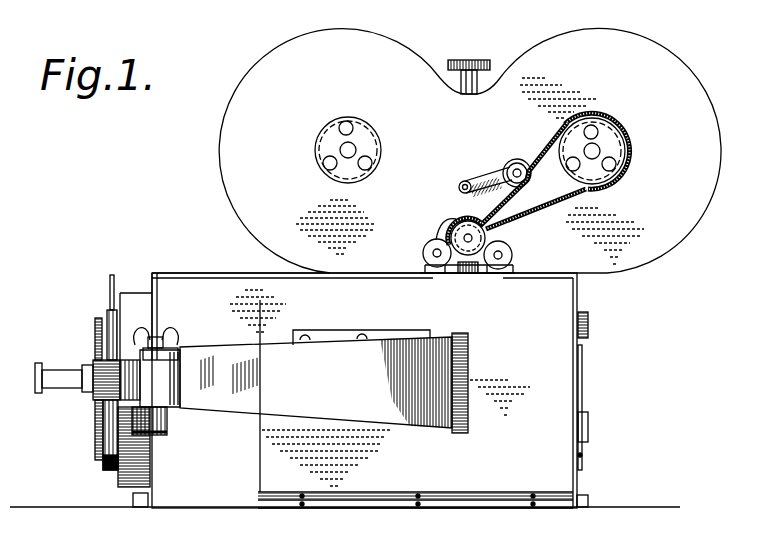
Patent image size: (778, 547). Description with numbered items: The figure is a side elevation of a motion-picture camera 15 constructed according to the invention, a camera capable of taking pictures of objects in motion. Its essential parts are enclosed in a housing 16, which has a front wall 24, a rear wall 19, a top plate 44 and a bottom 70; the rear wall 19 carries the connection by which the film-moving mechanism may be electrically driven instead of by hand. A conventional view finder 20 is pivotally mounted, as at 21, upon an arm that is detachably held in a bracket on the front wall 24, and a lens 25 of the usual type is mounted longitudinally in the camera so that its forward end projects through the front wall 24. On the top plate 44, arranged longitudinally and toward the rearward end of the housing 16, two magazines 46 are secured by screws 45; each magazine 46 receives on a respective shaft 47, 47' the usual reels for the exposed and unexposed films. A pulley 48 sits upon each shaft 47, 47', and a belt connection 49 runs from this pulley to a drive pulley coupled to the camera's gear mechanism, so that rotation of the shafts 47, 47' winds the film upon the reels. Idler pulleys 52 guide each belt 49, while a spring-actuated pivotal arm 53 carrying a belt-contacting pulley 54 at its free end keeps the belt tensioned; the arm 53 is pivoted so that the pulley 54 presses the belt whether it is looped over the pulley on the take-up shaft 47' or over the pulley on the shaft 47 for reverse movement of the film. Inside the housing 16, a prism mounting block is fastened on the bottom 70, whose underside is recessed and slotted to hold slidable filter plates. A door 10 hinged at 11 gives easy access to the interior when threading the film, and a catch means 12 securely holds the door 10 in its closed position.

The camera 15 is at (212, 179).
The magazine 46 is at (470, 161).
The screw 45 is at (478, 47).
The shaft 47 is at (377, 133).
The pulley 48 is at (331, 149).
The shaft 47' is at (610, 124).
The belt connection 49 is at (604, 191).
The spring-actuated pivotal arm 53 is at (491, 177).
The belt-contacting pulley 54 is at (519, 159).
The idler pulley 52 is at (500, 222).
The catch means 12 is at (478, 273).
The door 10 is at (364, 390).
The hinge 11 is at (500, 497).
The bottom 70 is at (215, 506).
The rear wall 19 is at (578, 480).
The housing 16 is at (150, 270).
The top plate 44 is at (253, 276).
The view finder 20 is at (324, 408).
The front wall 24 is at (158, 309).
The lens 25 is at (107, 474).
The pivotal mounting 21 is at (160, 437).